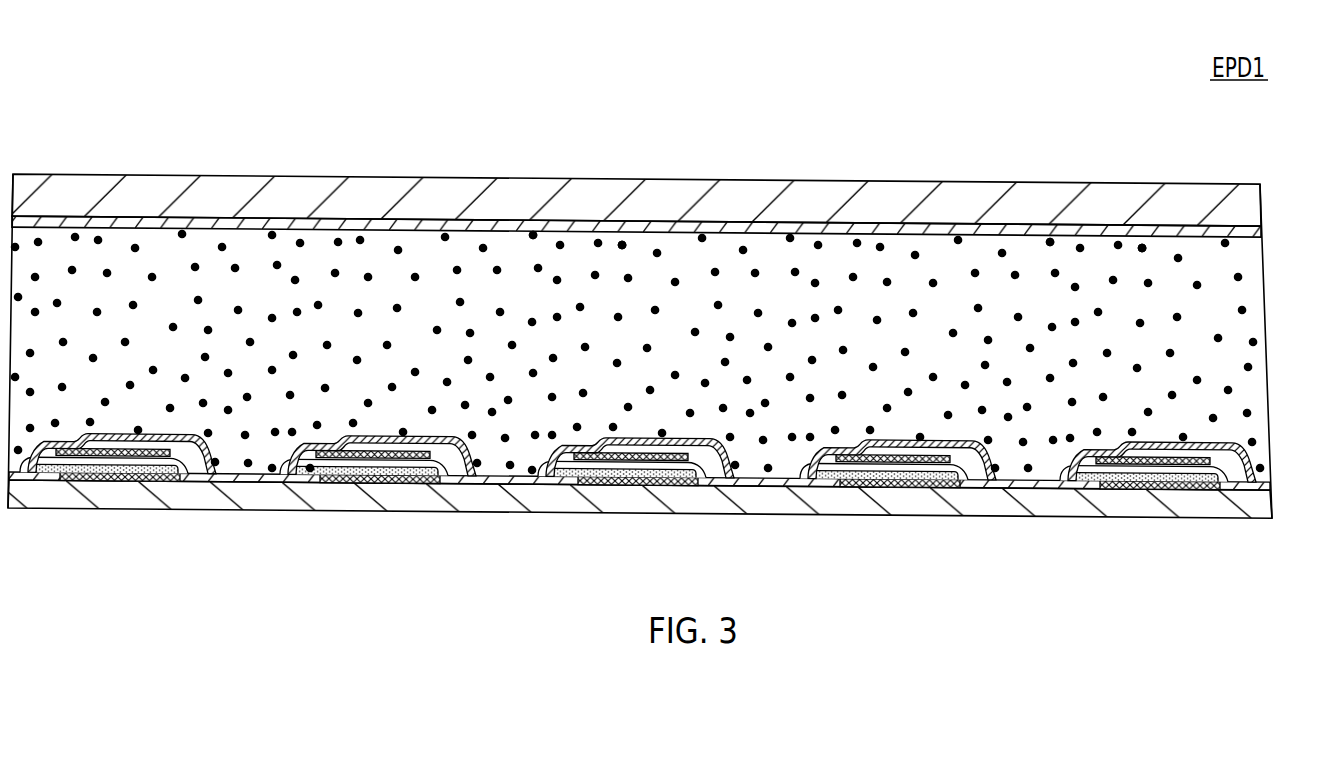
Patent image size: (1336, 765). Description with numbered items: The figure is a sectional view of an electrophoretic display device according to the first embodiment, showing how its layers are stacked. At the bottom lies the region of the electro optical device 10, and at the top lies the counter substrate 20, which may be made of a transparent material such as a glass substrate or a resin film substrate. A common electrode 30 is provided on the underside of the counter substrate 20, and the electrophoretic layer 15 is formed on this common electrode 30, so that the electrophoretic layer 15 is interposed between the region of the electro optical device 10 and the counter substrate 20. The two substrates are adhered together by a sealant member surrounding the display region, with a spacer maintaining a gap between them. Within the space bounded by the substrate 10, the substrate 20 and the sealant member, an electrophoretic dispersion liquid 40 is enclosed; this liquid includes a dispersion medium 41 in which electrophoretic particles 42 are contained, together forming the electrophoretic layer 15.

The region of the electro optical device 10 is at (1278, 447).
The electrophoretic layer 15 is at (1278, 237).
The counter substrate 20 is at (1245, 202).
The common electrode 30 is at (1250, 229).
The electrophoretic dispersion liquid 40 is at (637, 112).
The dispersion medium 41 is at (513, 250).
The electrophoretic particle 42 is at (624, 242).